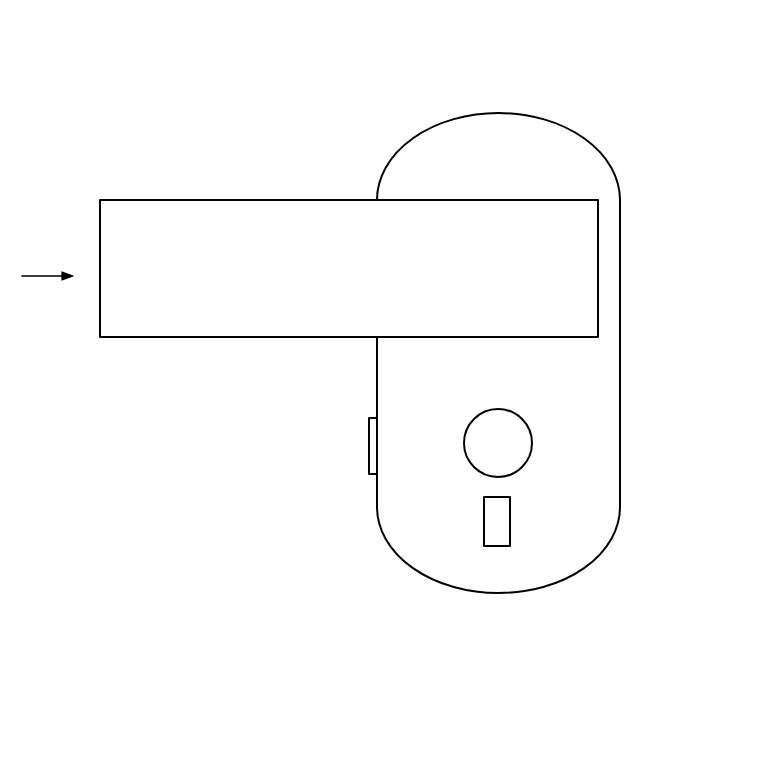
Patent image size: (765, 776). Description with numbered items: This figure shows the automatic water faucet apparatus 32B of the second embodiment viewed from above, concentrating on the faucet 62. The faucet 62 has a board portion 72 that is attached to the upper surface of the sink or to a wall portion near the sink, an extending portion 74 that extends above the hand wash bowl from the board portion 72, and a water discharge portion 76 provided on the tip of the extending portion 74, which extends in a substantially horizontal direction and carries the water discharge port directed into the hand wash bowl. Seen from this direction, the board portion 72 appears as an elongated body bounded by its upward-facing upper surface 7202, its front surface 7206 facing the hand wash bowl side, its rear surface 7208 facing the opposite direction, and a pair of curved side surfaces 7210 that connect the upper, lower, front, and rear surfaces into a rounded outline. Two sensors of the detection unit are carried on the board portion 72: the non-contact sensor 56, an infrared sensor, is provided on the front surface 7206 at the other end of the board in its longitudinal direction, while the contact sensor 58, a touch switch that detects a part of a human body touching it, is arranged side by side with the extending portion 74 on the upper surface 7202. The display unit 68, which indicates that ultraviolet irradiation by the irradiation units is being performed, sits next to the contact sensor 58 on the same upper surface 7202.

The automatic water faucet apparatus 32B is at (347, 76).
The board portion 72 is at (573, 163).
The curved side surfaces 7210 is at (506, 113).
The rear surface 7208 is at (621, 276).
The front surface 7206 is at (377, 370).
The upper surface 7202 is at (577, 472).
The contact sensor 58 is at (512, 440).
The display unit 68 is at (510, 522).
The non-contact sensor 56 is at (369, 447).
The water discharge portion 76 is at (162, 218).
The faucet 62 is at (450, 196).
The extending portion 74 is at (528, 199).